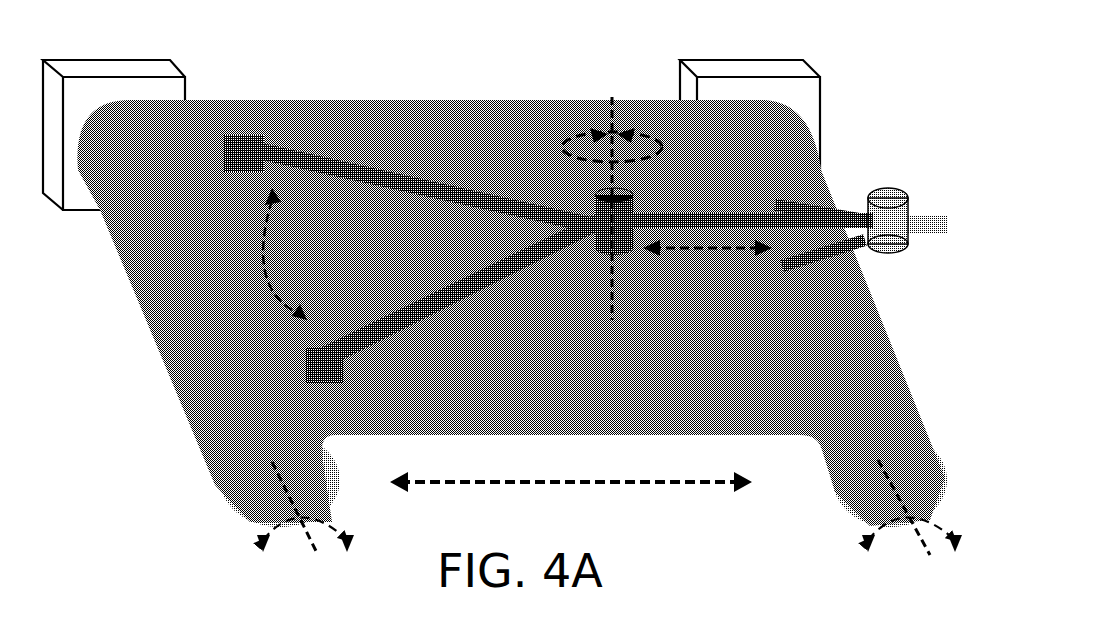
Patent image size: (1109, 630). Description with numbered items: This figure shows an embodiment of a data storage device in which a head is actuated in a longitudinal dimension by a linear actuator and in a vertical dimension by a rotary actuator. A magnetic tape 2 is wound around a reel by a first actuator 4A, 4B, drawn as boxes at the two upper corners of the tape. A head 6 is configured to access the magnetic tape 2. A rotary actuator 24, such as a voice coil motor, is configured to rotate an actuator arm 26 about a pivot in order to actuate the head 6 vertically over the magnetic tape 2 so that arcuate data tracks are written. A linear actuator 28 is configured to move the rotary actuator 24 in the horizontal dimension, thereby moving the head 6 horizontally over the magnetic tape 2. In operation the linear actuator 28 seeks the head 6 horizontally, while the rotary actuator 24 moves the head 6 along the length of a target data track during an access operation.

The magnetic tape 2 is at (166, 335).
The first actuator 4A is at (110, 62).
The first actuator 4B is at (746, 62).
The head 6 is at (242, 160).
The rotary actuator 24 is at (600, 250).
The actuator arm 26 is at (395, 172).
The linear actuator 28 is at (712, 213).